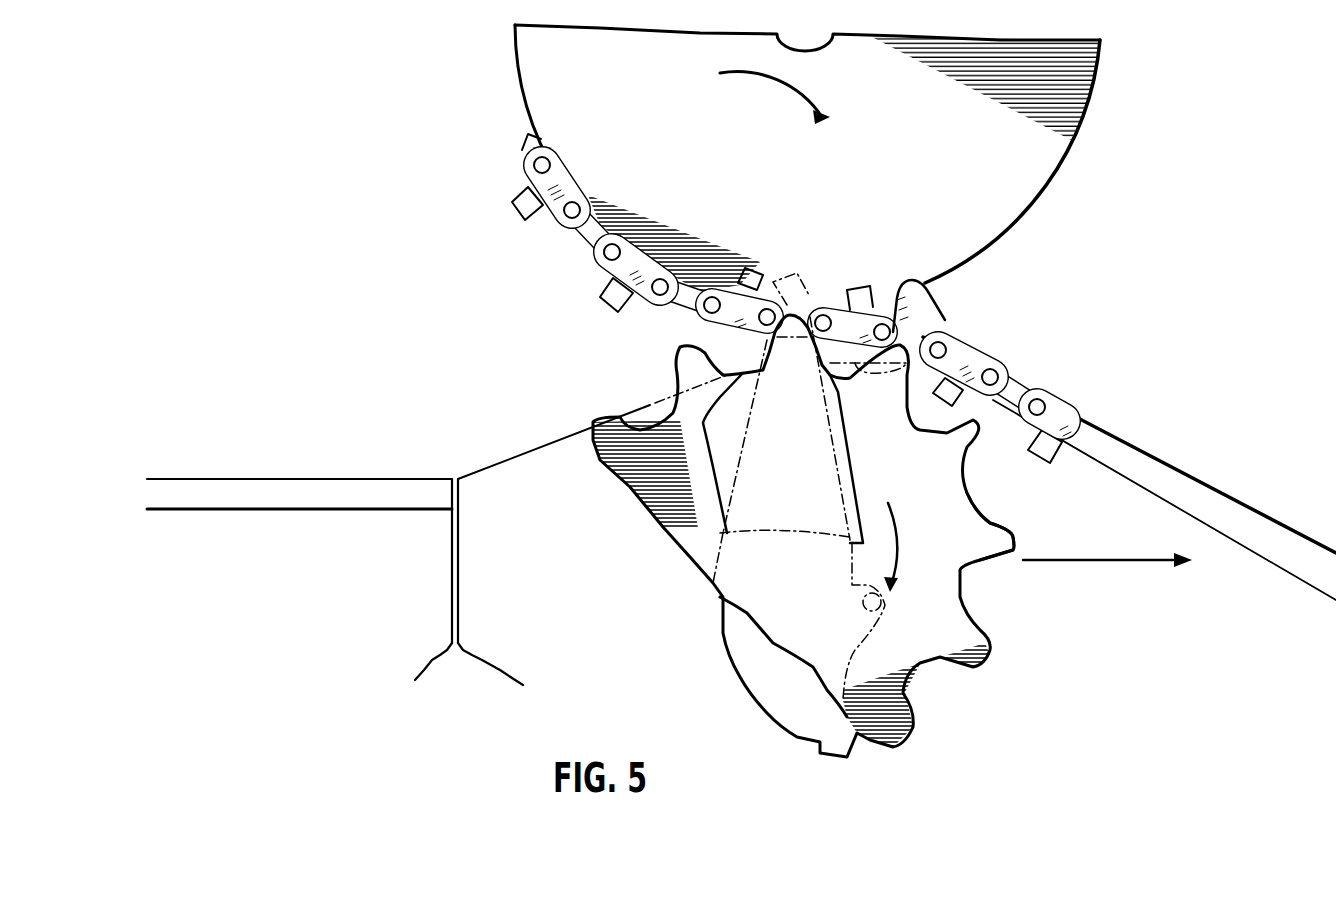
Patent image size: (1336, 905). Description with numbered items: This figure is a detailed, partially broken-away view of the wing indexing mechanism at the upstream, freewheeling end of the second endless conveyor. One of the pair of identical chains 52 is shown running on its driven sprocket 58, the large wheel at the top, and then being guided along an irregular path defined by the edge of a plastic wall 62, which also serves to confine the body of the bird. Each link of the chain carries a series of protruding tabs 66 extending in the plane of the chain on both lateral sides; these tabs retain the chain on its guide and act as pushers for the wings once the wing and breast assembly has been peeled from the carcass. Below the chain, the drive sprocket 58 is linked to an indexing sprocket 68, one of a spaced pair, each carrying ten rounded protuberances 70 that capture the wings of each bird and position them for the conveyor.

The chain 52 is at (583, 243).
The driven sprocket 58 is at (826, 212).
The plastic wall 62 is at (1073, 326).
The protruding tab 66 is at (603, 297).
The indexing sprocket 68 is at (909, 481).
The rounded protuberance 70 is at (977, 420).